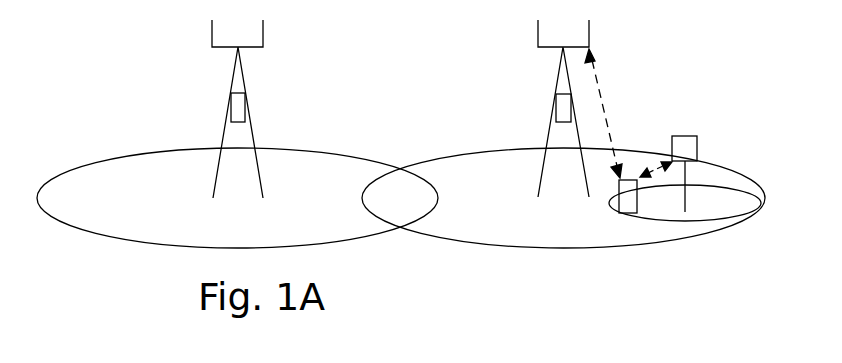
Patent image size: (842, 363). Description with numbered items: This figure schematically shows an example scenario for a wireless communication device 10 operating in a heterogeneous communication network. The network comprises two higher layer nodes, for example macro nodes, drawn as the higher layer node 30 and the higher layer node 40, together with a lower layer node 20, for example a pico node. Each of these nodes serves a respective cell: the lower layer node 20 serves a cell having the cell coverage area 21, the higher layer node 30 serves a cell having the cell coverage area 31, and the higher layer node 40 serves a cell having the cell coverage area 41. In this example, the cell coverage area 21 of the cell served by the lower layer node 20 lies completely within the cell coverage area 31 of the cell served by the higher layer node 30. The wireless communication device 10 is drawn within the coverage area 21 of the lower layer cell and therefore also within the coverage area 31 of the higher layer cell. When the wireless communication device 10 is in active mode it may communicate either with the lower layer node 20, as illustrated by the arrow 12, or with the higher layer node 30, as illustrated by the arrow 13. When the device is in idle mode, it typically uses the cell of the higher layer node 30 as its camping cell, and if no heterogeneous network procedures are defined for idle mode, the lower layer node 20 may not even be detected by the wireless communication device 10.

The wireless communication device 10 is at (625, 202).
The arrow 12 is at (648, 172).
The arrow 13 is at (597, 83).
The lower layer node 20 is at (688, 150).
The cell coverage area 21 is at (722, 223).
The higher layer node 30 is at (564, 108).
The cell coverage area 31 is at (452, 242).
The higher layer node 40 is at (238, 102).
The cell coverage area 41 is at (74, 228).